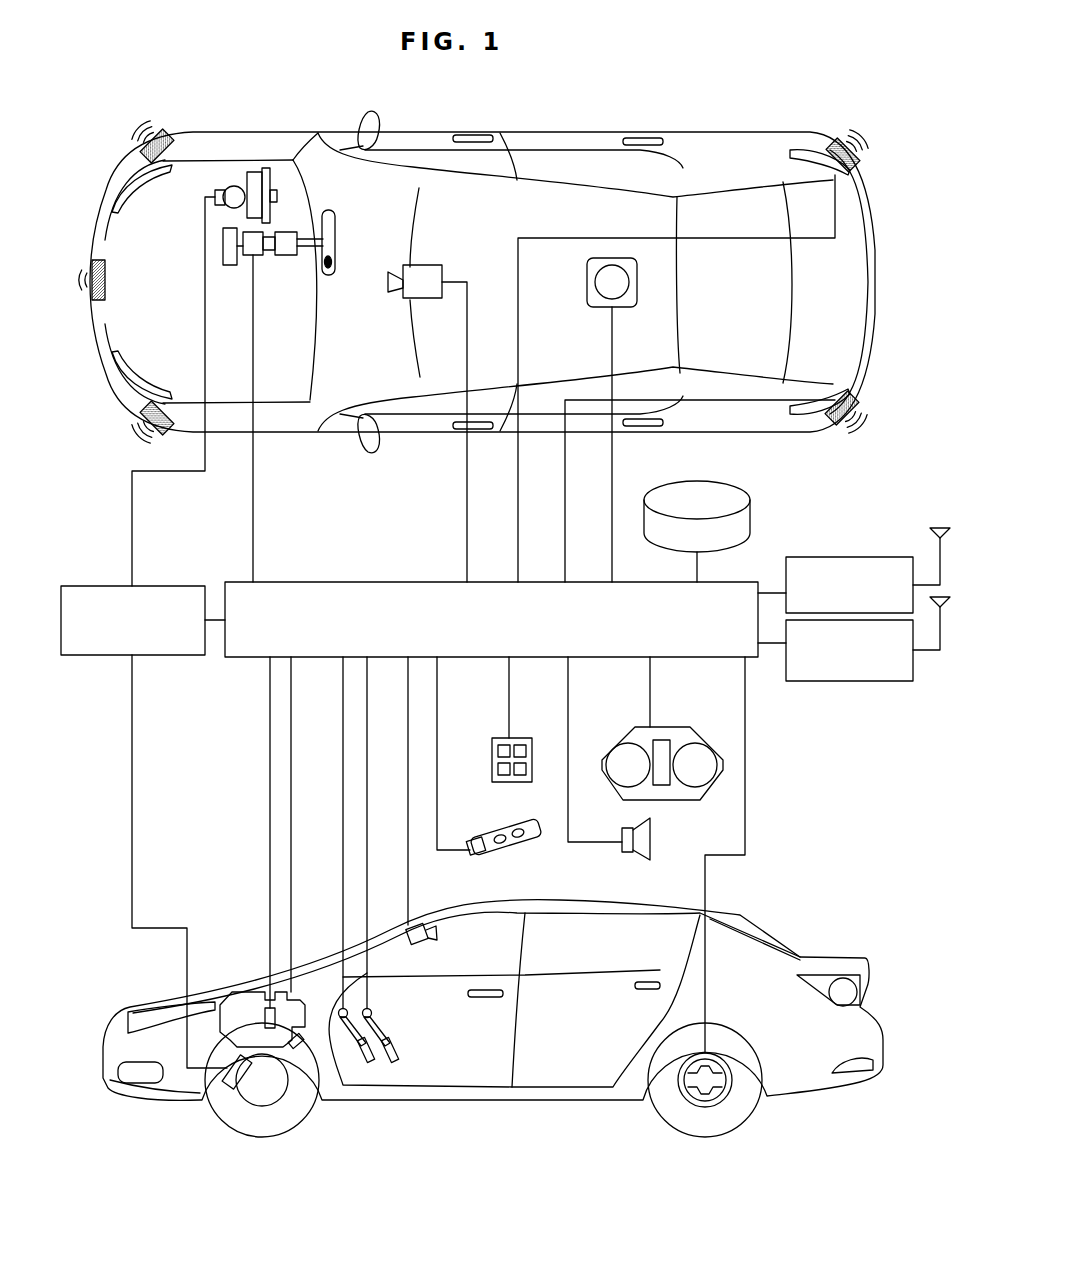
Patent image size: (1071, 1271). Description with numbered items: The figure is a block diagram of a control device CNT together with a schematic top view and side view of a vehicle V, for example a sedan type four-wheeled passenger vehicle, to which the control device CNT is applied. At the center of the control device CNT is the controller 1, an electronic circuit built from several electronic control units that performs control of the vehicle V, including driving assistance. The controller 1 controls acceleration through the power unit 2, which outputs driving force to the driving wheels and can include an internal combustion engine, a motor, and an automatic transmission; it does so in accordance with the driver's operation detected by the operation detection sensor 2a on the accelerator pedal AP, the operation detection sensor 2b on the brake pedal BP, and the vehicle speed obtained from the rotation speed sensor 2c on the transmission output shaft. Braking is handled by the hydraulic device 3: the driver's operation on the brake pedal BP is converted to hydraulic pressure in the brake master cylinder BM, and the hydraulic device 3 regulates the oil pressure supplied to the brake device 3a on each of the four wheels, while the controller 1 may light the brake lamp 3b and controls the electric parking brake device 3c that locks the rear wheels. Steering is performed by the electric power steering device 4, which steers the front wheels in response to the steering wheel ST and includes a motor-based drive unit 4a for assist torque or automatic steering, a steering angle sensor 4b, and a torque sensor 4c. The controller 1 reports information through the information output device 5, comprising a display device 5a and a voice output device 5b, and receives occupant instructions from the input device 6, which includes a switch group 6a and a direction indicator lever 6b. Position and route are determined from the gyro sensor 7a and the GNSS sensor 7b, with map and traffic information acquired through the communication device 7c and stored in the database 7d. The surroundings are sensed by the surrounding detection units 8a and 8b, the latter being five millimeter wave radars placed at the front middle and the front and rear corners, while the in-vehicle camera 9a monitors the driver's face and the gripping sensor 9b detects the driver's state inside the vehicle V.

The controller 1 is at (423, 582).
The power unit 2 is at (271, 908).
The operation detection sensor 2a is at (341, 1008).
The operation detection sensor 2b is at (373, 1011).
The rotation speed sensor 2c is at (265, 1005).
The hydraulic device 3 is at (105, 586).
The brake device 3a is at (233, 1085).
The brake lamp 3b is at (840, 980).
The electric parking brake device 3c is at (693, 1103).
The electric power steering device 4 is at (245, 340).
The drive unit 4a is at (268, 256).
The steering angle sensor 4b is at (222, 238).
The torque sensor 4c is at (286, 230).
The information output device 5 is at (650, 758).
The display device 5a is at (622, 743).
The voice output device 5b is at (623, 837).
The input device 6 is at (497, 756).
The switch group 6a is at (492, 748).
The direction indicator lever 6b is at (488, 837).
The gyro sensor 7a is at (596, 308).
The GNSS sensor 7b is at (842, 557).
The communication device 7c is at (866, 682).
The database 7d is at (750, 503).
The surrounding detection unit 8a is at (425, 265).
The surrounding detection unit 8b is at (170, 130).
The in-vehicle detection unit 9a is at (420, 922).
The in-vehicle detection unit 9b is at (336, 259).
The brake master cylinder BM is at (234, 185).
The steering wheel ST is at (338, 214).
The accelerator pedal AP is at (372, 1060).
The brake pedal BP is at (395, 1060).
The control device CNT is at (587, 587).
The vehicle V is at (890, 188).